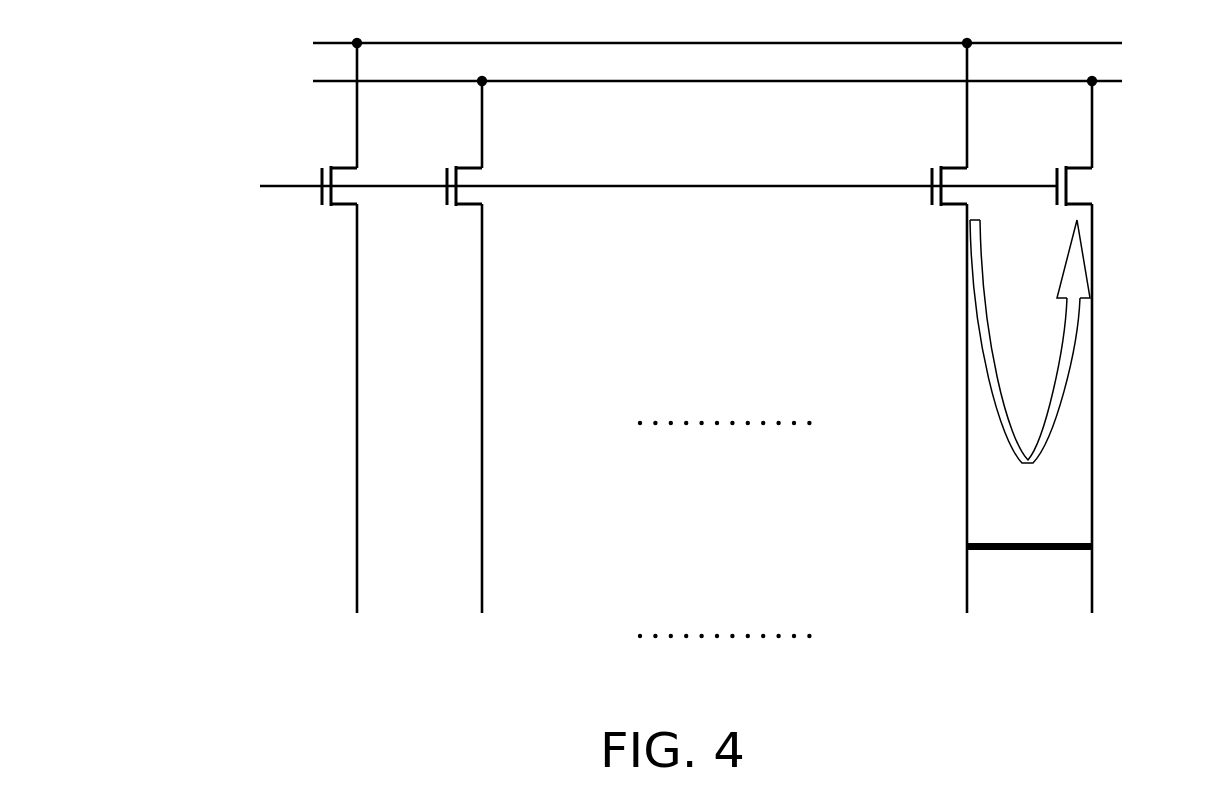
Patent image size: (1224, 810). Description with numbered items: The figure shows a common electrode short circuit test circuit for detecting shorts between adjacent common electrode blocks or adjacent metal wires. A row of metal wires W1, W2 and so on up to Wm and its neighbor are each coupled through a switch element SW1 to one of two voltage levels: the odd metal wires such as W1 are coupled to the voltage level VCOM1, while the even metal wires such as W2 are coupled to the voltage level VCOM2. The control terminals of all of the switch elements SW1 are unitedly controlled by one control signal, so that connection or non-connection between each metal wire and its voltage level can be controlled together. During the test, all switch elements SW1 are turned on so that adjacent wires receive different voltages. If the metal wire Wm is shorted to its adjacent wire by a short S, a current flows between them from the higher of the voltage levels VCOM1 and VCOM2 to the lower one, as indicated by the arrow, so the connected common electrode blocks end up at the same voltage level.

The voltage level VCOM1 is at (653, 42).
The voltage level VCOM2 is at (653, 81).
The switch element SW1 is at (357, 177).
The metal wire W1 is at (355, 349).
The metal wire W2 is at (481, 368).
The metal wire Wm is at (969, 349).
The short circuit S is at (1068, 543).